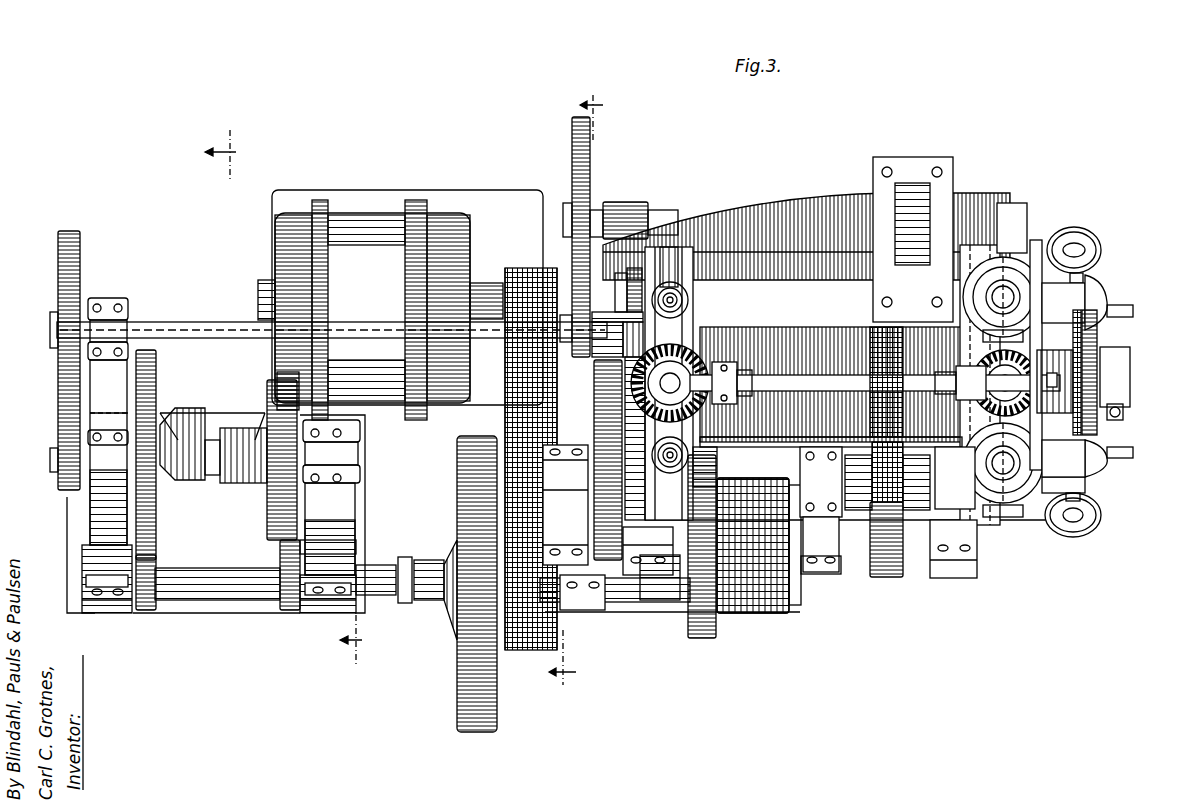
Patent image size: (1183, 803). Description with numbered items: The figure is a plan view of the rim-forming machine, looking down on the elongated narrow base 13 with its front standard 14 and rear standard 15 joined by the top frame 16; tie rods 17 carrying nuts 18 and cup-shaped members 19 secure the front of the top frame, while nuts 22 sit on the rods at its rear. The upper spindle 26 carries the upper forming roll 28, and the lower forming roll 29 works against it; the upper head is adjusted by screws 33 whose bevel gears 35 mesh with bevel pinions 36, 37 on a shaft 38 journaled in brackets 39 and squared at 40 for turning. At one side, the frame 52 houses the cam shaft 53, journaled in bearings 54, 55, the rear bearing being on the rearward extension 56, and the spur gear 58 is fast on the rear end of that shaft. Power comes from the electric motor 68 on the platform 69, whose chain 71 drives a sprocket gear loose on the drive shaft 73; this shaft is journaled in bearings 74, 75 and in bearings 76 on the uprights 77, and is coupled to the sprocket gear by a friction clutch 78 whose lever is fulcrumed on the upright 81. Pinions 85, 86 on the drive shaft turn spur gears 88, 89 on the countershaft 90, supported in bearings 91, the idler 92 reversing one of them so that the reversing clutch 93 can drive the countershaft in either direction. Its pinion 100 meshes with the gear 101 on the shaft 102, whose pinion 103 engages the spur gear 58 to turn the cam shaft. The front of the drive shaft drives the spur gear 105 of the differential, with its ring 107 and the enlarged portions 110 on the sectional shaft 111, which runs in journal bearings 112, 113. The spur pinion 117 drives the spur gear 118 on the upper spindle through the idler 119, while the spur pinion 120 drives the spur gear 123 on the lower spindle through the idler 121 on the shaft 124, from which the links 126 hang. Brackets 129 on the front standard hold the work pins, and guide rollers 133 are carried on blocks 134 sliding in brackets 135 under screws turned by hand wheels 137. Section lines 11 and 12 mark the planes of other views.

The section line 11- 11 is at (589, 390).
The section line 12- 12 is at (293, 397).
The base 13 is at (205, 414).
The front standard 14 is at (1060, 240).
The rear standard 15 is at (690, 298).
The top frame 16 is at (775, 327).
The vertical tie rods 17 is at (1085, 280).
The nuts 18 is at (990, 300).
The cup-shaped members 19 is at (985, 250).
The nuts 22 is at (690, 306).
The upper spindle 26 is at (1130, 405).
The forming roll 28 is at (1098, 352).
The forming roll 29 is at (1100, 330).
The screws 33 is at (682, 375).
The bevel gears 35 is at (965, 340).
The bevel pinion 36 is at (966, 395).
The bevel pinion 37 is at (730, 370).
The longitudinally extending shaft 38 is at (812, 375).
The brackets 39 is at (740, 442).
The squared end 40 is at (1058, 380).
The frame 52 is at (878, 200).
The shaft 53 is at (662, 210).
The bearing 54 is at (1005, 203).
The rear bearing 55 is at (632, 202).
The rearward extension 56 is at (758, 203).
The spur gear 58 is at (592, 165).
The electric motor 68 is at (432, 226).
The platform 69 is at (503, 200).
The chain 71 is at (527, 412).
The drive shaft 73 is at (226, 600).
The bearing 74 is at (672, 600).
The bearing 75 is at (827, 570).
The bearings 76 is at (112, 613).
The uprights 77 is at (108, 421).
The friction clutch 78 is at (410, 551).
The upright 81 is at (355, 492).
The pinion 85 is at (146, 612).
The pinion 86 is at (285, 612).
The spur gear 88 is at (146, 350).
The spur gear 89 is at (292, 372).
The countershaft 90 is at (58, 456).
The bearings 91 is at (340, 455).
The idler 92 is at (310, 548).
The reversing clutch 93 is at (237, 422).
The pinion 100 is at (60, 470).
The gear 101 is at (52, 322).
The shaft 102 is at (205, 320).
The pinion 103 is at (592, 300).
The spur gear 105 is at (700, 640).
The ring 107 is at (753, 545).
The enlarged portions 110 is at (960, 580).
The sectional shaft 111 is at (852, 520).
The journal bearing 112 is at (648, 648).
The journal bearing 113 is at (793, 605).
The spur pinion 117 is at (610, 610).
The spur gear 118 is at (600, 450).
The idler 119 is at (628, 446).
The spur pinion 120 is at (893, 578).
The idler 121 is at (862, 442).
The spur gear 123 is at (865, 335).
The shaft 124 is at (800, 460).
The links 126 is at (812, 575).
The brackets 129 is at (1133, 450).
The guide rollers 133 is at (1107, 308).
The blocks 134 is at (1095, 462).
The brackets 135 is at (1082, 555).
The hand wheels 137 is at (1100, 242).